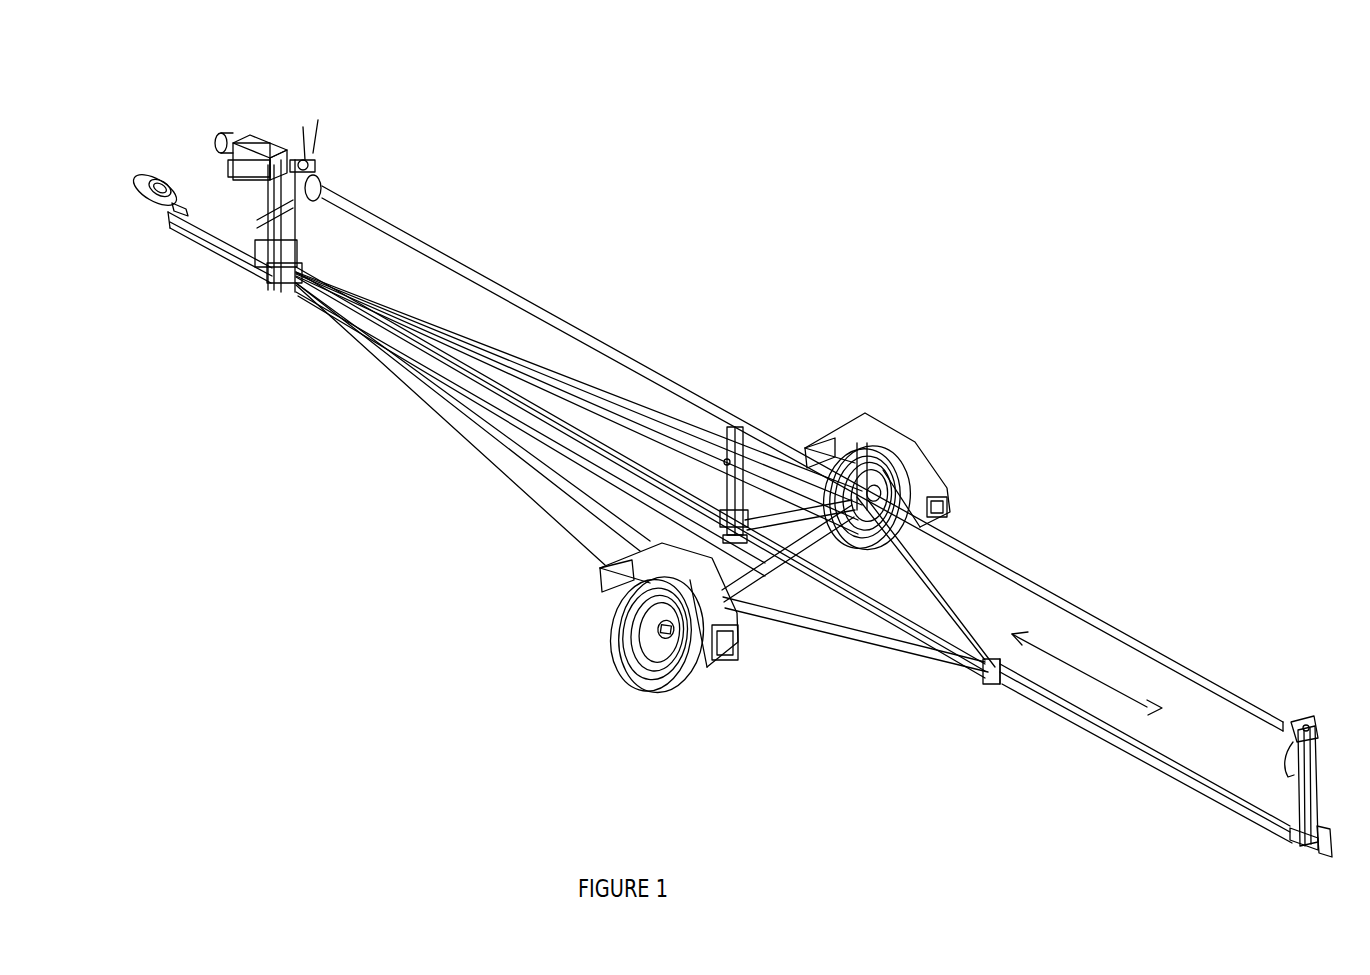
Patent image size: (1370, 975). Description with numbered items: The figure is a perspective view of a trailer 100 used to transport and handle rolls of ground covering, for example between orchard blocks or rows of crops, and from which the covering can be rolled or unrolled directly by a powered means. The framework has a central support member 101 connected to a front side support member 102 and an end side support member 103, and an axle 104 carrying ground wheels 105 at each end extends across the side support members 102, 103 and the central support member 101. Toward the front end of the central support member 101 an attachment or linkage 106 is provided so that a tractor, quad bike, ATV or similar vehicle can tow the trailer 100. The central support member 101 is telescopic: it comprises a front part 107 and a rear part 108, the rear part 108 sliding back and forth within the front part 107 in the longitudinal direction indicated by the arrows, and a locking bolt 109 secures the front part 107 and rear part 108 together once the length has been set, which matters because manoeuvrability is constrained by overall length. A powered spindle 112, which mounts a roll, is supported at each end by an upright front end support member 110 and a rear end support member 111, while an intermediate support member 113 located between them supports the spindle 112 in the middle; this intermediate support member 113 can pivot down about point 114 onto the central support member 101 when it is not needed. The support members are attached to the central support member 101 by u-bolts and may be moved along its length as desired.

The trailer 100 is at (1112, 432).
The central support member 101 is at (511, 394).
The front side support member 102 is at (610, 403).
The end side support member 103 is at (913, 583).
The axle 104 is at (755, 582).
The ground wheels 105 is at (887, 480).
The attachment or linkage 106 is at (150, 178).
The front part 107 is at (457, 372).
The rear part 108 is at (1137, 750).
The locking bolt 109 is at (993, 673).
The front end support member 110 is at (268, 162).
The rear end support member 111 is at (1322, 731).
The powered spindle 112 is at (533, 308).
The intermediate support member 113 is at (737, 430).
The pivot point 114 is at (706, 530).